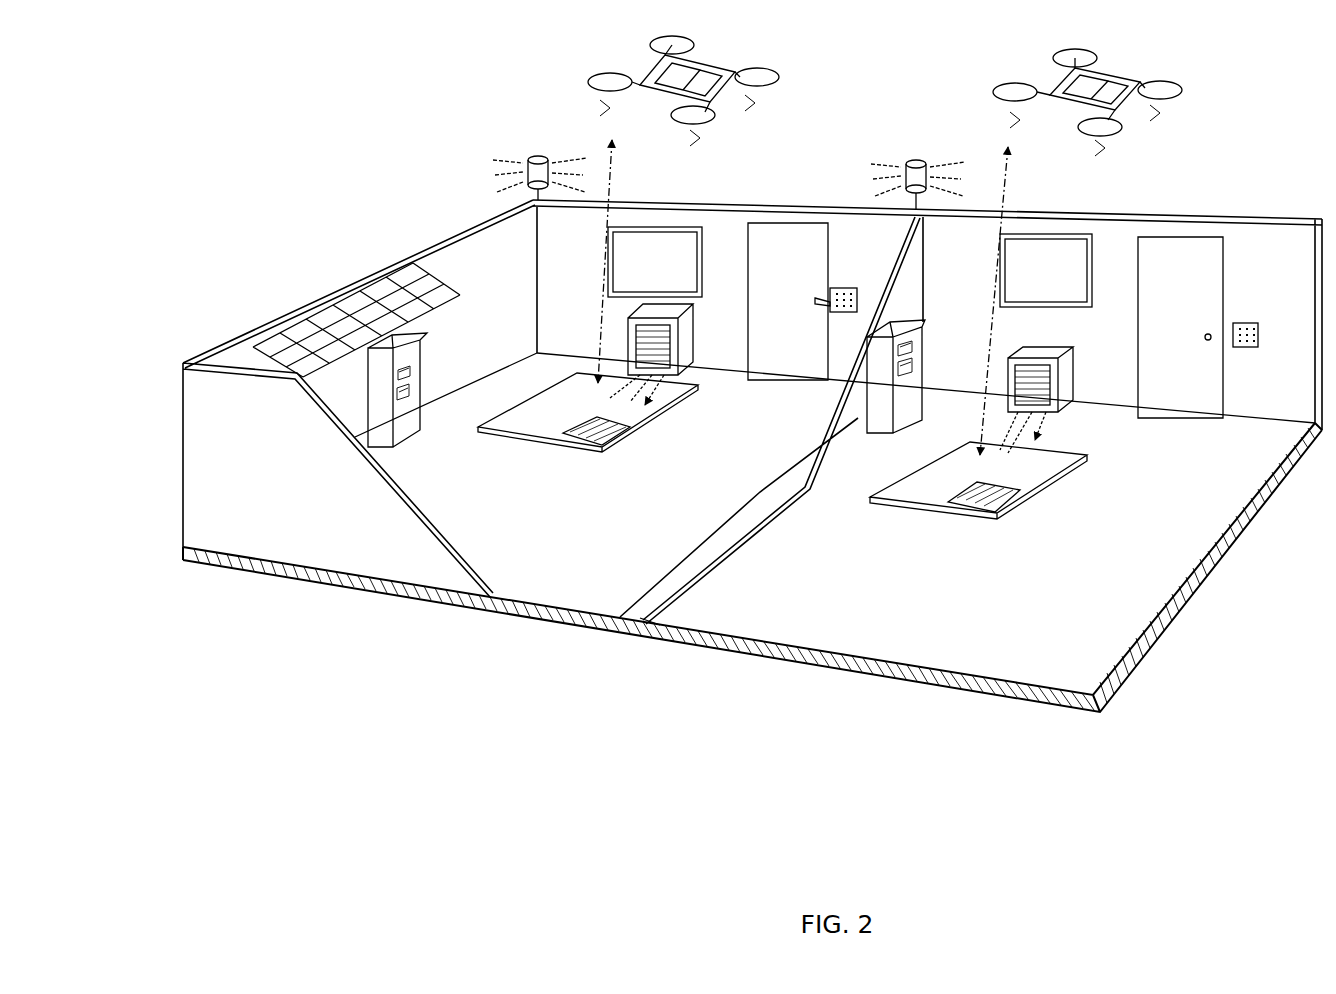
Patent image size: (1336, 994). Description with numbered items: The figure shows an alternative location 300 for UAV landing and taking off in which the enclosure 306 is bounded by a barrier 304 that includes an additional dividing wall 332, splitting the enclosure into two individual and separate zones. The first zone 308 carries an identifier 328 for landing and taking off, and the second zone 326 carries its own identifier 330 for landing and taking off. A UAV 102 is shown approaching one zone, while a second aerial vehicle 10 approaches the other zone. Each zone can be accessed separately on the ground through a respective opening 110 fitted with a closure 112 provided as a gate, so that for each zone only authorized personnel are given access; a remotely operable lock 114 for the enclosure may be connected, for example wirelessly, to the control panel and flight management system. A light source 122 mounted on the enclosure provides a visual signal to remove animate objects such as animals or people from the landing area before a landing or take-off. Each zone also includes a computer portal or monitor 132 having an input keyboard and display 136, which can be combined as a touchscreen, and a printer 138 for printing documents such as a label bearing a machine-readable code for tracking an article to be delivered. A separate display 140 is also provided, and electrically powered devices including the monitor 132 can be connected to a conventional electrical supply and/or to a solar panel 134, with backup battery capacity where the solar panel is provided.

The unmanned aerial vehicle 10 is at (1130, 53).
The UAV 102 is at (720, 53).
The opening 110 is at (768, 240).
The closure 112 is at (803, 232).
The remotely operable lock 114 is at (823, 298).
The light source 122 is at (535, 158).
The monitor 132 is at (400, 333).
The solar panel 134 is at (340, 308).
The input keyboard and display 136 is at (370, 393).
The printer 138 is at (373, 440).
The display 140 is at (673, 224).
The location 300 is at (462, 672).
The barrier 304 is at (838, 286).
The enclosure 306 is at (210, 437).
The first zone 308 is at (577, 373).
The second zone 326 is at (970, 443).
The identifier 328 is at (533, 420).
The identifier 330 is at (968, 485).
The dividing wall 332 is at (650, 618).